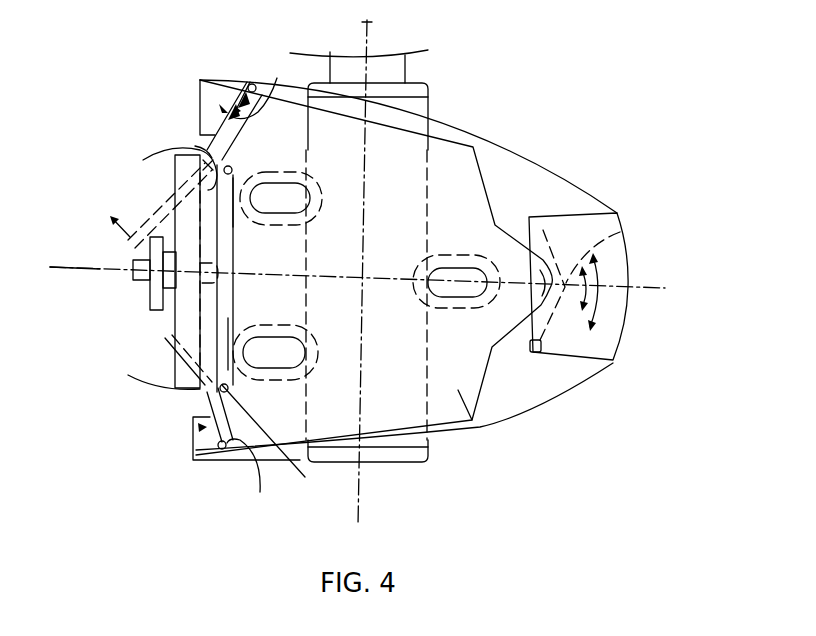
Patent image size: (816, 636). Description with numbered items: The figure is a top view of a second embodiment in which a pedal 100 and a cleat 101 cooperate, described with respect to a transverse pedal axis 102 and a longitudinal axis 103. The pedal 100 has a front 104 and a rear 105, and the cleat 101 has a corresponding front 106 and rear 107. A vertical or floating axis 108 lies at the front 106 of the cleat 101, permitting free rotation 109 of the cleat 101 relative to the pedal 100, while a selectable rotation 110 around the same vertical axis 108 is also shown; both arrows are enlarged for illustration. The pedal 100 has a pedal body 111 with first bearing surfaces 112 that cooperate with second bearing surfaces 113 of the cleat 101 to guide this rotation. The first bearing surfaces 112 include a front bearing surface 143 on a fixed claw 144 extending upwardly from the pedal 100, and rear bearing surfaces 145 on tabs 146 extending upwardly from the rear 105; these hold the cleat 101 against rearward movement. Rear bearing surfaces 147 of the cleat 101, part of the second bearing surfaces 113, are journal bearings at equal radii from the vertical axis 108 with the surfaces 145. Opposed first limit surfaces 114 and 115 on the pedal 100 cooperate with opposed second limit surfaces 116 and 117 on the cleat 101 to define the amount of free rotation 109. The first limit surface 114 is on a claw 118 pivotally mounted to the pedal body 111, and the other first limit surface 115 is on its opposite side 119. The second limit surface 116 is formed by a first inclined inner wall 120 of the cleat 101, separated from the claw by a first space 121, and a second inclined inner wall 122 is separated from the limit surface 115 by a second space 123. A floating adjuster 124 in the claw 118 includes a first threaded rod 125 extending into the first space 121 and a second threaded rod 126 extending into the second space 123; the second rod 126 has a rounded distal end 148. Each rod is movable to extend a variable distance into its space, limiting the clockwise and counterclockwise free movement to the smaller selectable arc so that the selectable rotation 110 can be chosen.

The pedal 100 is at (502, 157).
The cleat 101 is at (472, 420).
The pedal axis 102 is at (368, 43).
The longitudinal axis 103 is at (653, 290).
The front 104 is at (597, 377).
The rear 105 is at (237, 457).
The front 106 is at (517, 233).
The rear 107 is at (262, 84).
The vertical axis 108 is at (620, 232).
The free rotation 109 is at (598, 297).
The selectable rotation 110 is at (600, 287).
The pedal body 111 is at (452, 439).
The first bearing surfaces 112 is at (248, 83).
The second bearing surfaces 113 is at (227, 110).
The first limit surface 114 is at (161, 376).
The first limit surface 115 is at (145, 160).
The second limit surface 116 is at (223, 387).
The second limit surface 117 is at (237, 187).
The claw 118 is at (150, 310).
The opposite side 119 is at (233, 193).
The first inclined inner wall 120 is at (205, 398).
The first space 121 is at (228, 318).
The second inclined inner wall 122 is at (195, 146).
The second space 123 is at (233, 227).
The floating adjuster 124 is at (161, 203).
The first threaded rod 125 is at (168, 336).
The second threaded rod 126 is at (130, 240).
The front bearing surface 143 is at (533, 343).
The fixed claw 144 is at (608, 330).
The rear bearing surfaces 145 is at (266, 287).
The tabs 146 is at (210, 117).
The rear bearing surfaces 147 is at (220, 107).
The rounded distal end 148 is at (279, 443).